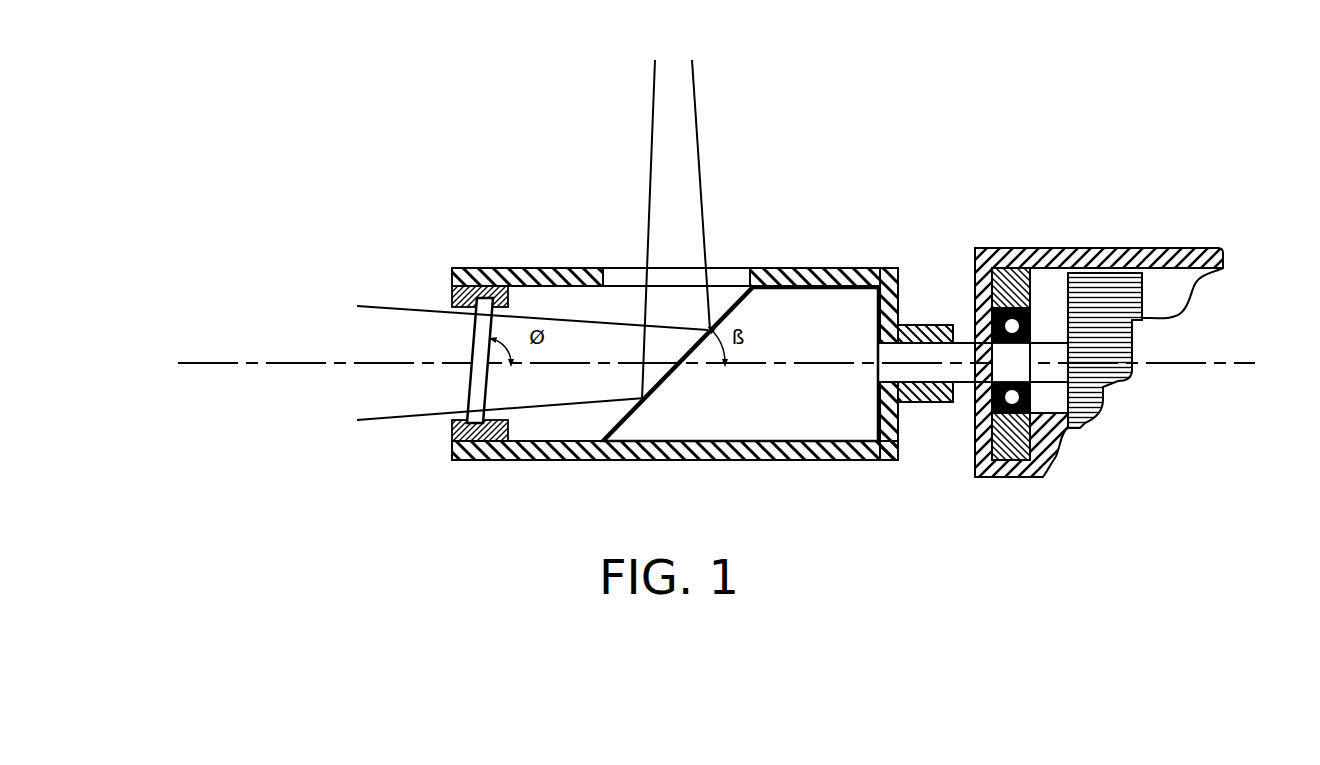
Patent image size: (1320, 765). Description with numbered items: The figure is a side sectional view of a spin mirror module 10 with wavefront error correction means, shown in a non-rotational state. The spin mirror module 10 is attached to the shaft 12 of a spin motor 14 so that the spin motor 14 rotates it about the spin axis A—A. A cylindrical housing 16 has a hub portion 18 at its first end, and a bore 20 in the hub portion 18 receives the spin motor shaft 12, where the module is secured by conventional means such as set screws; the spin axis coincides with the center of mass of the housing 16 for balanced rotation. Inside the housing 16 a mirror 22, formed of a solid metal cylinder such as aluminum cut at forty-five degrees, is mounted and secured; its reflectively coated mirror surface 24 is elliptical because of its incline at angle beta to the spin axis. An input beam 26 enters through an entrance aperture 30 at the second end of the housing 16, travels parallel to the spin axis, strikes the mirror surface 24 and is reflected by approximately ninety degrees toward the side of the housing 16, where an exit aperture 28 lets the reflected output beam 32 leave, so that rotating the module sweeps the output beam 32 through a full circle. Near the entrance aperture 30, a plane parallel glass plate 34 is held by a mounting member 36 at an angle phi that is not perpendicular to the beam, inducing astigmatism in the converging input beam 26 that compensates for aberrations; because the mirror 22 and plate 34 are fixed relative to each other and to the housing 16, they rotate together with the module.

The spin mirror module 10 is at (771, 178).
The spin motor shaft 12 is at (965, 347).
The spin motor 14 is at (1088, 248).
The cylindrical housing 16 is at (820, 460).
The hub portion 18 is at (916, 403).
The bore 20 is at (893, 350).
The mirror 22 is at (720, 412).
The mirror surface 24 is at (710, 268).
The input beam 26 is at (417, 416).
The exit aperture 28 is at (618, 268).
The entrance aperture 30 is at (472, 309).
The output beam 32 is at (651, 116).
The plane parallel glass plate 34 is at (470, 390).
The mounting member 36 is at (450, 298).